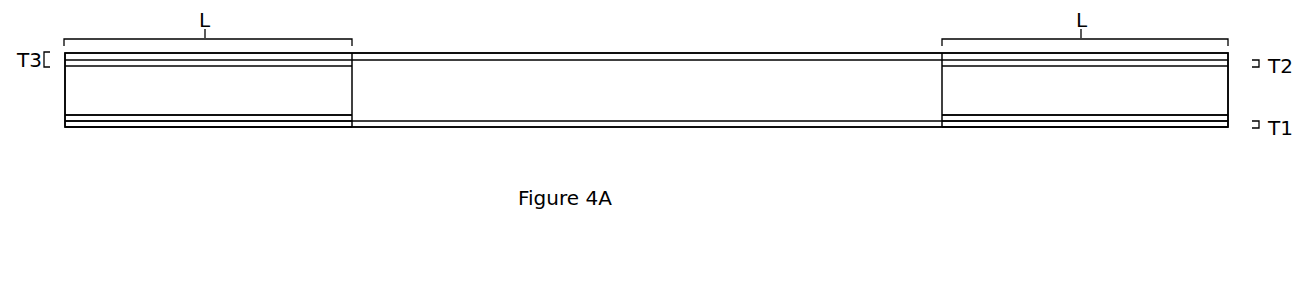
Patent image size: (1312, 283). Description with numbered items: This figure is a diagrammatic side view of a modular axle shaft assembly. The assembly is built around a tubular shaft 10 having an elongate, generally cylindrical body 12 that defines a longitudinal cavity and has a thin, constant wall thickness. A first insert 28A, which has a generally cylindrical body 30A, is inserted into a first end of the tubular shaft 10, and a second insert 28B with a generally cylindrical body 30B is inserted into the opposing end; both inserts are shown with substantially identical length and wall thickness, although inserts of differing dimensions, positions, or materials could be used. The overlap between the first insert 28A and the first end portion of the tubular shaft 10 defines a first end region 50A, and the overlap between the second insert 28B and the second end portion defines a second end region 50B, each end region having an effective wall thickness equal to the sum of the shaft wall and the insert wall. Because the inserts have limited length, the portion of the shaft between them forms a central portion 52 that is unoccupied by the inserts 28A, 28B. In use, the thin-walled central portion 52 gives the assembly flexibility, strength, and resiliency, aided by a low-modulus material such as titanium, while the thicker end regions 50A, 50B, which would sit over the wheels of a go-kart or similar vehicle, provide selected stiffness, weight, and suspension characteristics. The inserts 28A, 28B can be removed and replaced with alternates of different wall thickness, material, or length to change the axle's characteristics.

The tubular shaft 10 is at (697, 152).
The body 12 is at (472, 128).
The first insert 28A is at (95, 142).
The second insert 28B is at (1167, 142).
The body of first insert 30A is at (210, 127).
The body of second insert 30B is at (1075, 123).
The first end region 50A is at (278, 93).
The second end region 50B is at (1006, 98).
The central portion 52 is at (603, 88).